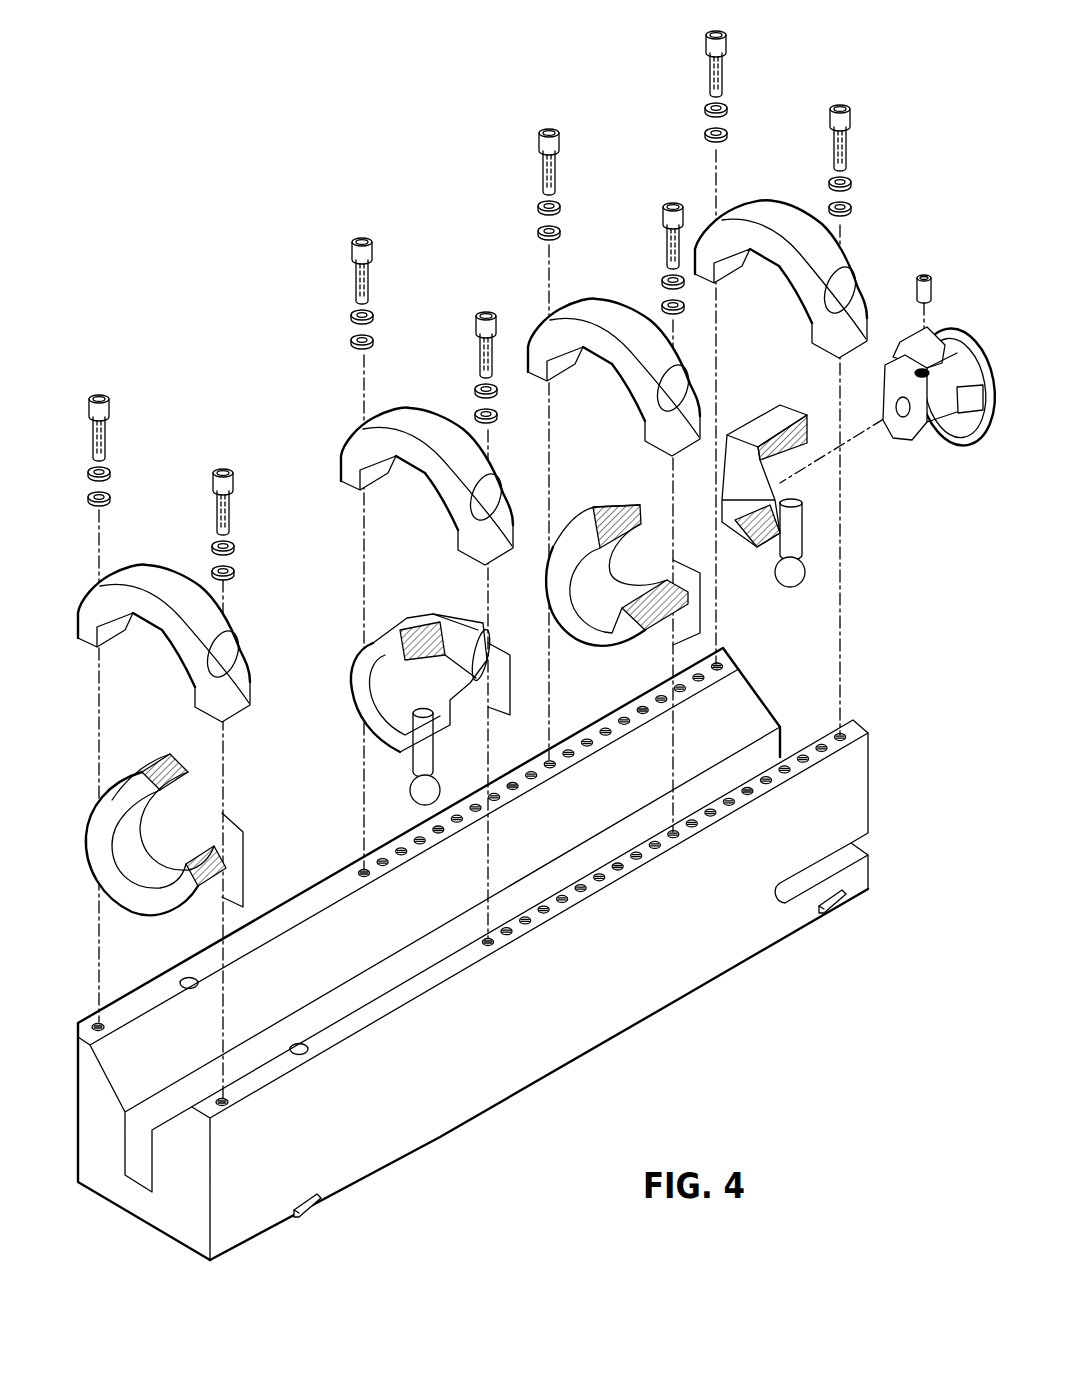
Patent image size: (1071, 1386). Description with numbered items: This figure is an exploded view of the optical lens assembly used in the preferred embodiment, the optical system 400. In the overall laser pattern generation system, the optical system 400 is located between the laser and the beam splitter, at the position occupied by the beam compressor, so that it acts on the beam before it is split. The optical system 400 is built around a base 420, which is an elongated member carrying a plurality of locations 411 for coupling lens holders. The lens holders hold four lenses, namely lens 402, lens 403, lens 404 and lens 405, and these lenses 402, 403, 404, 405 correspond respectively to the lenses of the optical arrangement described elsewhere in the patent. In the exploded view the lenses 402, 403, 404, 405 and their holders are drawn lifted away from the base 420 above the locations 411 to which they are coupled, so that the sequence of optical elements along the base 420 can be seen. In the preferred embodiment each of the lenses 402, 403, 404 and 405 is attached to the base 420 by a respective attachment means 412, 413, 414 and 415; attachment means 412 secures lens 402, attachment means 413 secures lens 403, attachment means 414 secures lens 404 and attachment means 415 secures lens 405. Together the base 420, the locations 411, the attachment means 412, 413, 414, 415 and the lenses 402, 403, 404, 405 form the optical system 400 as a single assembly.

The optical system 400 is at (357, 92).
The lens 402 is at (181, 827).
The lens 403 is at (496, 640).
The lens 404 is at (645, 558).
The lens 405 is at (722, 478).
The locations 411 is at (587, 902).
The attachment means 412 is at (168, 548).
The attachment means 413 is at (426, 400).
The attachment means 414 is at (618, 302).
The attachment means 415 is at (791, 192).
The base 420 is at (760, 938).